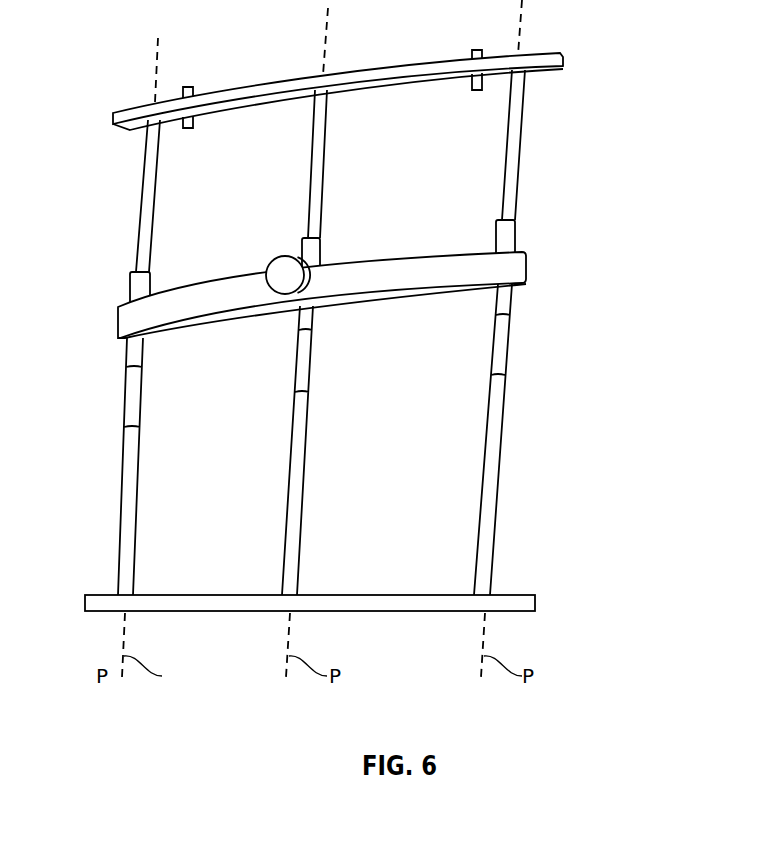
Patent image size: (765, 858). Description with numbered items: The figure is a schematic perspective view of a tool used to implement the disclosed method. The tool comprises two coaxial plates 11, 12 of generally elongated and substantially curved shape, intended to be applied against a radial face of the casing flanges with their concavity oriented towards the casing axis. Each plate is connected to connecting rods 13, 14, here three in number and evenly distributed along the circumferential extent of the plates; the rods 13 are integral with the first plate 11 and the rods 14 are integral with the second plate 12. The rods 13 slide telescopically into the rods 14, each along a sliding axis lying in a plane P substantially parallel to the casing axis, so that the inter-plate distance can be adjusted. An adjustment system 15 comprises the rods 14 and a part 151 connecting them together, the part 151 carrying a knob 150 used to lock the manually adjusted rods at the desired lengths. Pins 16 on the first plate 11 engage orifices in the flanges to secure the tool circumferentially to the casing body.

The first plate 11 is at (561, 54).
The second plate 12 is at (535, 603).
The connecting rods 13 is at (152, 180).
The connecting rods 14 is at (138, 515).
The adjustment system 15 is at (541, 266).
The knob 150 is at (268, 268).
The connecting part 151 is at (193, 310).
The pins 16 is at (483, 83).